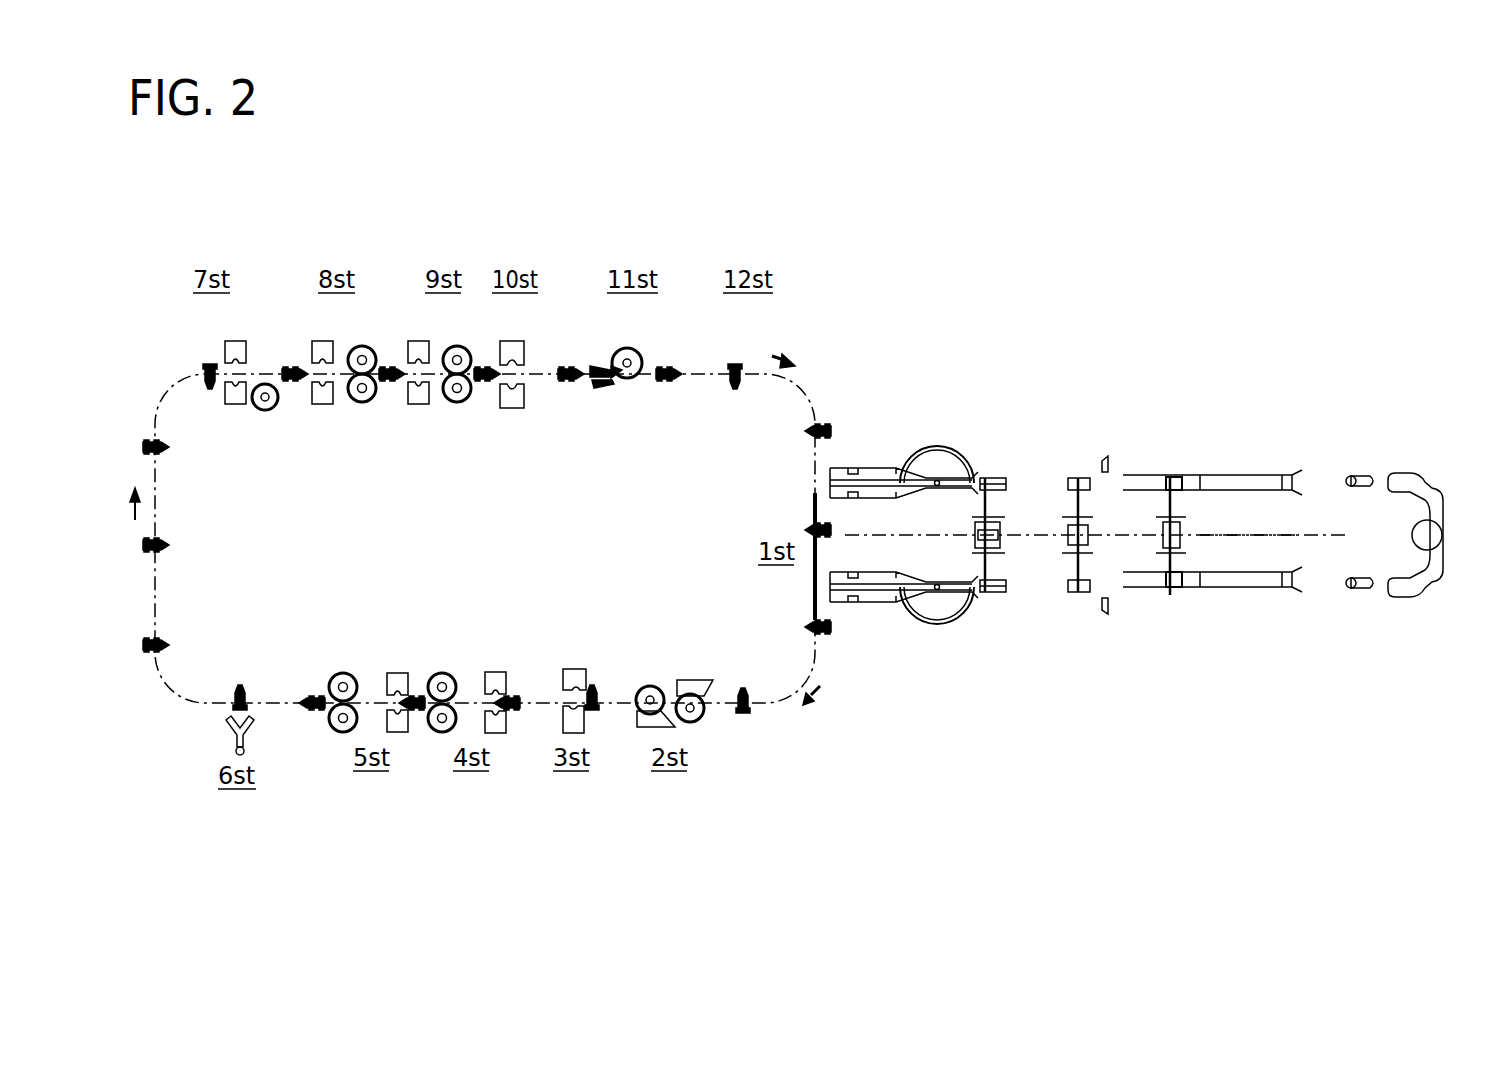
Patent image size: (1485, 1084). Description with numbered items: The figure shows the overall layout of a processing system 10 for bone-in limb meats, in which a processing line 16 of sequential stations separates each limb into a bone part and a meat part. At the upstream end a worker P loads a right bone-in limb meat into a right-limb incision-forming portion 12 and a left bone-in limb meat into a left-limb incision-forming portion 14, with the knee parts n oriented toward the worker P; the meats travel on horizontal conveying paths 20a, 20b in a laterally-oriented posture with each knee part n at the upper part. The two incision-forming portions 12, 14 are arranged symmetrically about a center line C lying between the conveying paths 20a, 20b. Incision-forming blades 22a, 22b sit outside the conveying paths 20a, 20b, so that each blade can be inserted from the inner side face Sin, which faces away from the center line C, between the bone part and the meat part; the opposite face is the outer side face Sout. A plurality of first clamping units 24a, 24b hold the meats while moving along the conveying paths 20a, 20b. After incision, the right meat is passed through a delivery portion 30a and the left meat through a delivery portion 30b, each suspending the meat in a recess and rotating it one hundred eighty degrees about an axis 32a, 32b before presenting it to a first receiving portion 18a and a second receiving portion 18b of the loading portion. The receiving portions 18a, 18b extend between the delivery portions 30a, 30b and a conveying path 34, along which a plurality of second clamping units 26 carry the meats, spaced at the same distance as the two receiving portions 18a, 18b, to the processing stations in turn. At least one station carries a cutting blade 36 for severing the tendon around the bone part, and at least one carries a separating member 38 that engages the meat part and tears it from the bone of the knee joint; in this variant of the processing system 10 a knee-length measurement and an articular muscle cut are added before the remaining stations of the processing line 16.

The processing system 10 is at (858, 183).
The processing line 16 is at (574, 336).
The cutting blade 36 is at (362, 342).
The separating member 38 is at (524, 340).
The second clamping unit 26 is at (673, 368).
The conveying path 34 is at (813, 497).
The second receiving portion 18b is at (883, 467).
The first receiving portion 18a is at (883, 602).
The axis 32b is at (936, 480).
The axis 32a is at (937, 590).
The delivery portion 30b is at (960, 466).
The delivery portion 30a is at (962, 603).
The first clamping unit 24b is at (1080, 477).
The first clamping unit 24a is at (1079, 593).
The incision-forming blade 22b is at (1106, 458).
The incision-forming blade 22a is at (1106, 614).
The left-limb incision-forming portion 14 is at (1208, 464).
The right-limb incision-forming portion 12 is at (1205, 597).
The conveying path 20b is at (1271, 475).
The conveying path 20a is at (1270, 588).
The center line C is at (1240, 531).
The knee part n is at (1352, 476).
The worker P is at (1430, 574).
The inner side face Sin is at (1397, 491).
The outer side face Sout is at (1390, 474).